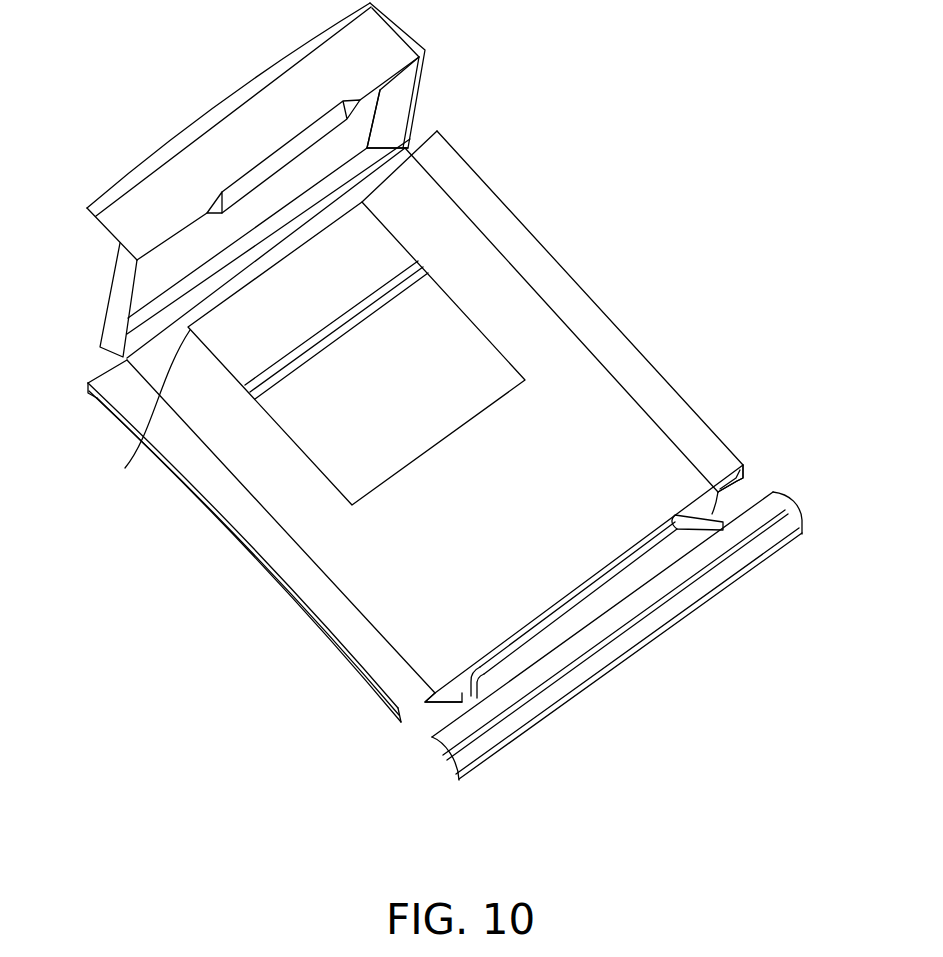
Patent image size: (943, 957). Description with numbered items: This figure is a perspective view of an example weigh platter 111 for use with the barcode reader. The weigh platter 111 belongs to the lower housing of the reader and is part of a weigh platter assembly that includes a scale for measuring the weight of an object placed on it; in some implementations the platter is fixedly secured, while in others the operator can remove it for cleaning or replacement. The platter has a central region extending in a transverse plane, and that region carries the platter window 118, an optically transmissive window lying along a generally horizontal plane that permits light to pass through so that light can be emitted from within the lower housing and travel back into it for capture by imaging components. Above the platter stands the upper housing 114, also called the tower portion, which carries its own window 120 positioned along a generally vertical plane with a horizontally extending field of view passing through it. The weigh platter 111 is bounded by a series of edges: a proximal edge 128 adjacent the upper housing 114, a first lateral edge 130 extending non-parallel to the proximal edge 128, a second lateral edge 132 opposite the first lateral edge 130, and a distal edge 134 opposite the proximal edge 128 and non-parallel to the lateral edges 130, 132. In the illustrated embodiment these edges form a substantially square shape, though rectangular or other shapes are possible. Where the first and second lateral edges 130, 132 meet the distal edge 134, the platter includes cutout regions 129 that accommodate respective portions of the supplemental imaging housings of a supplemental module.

The weigh platter 111 is at (415, 416).
The upper housing 114 is at (122, 223).
The platter window 118 is at (356, 353).
The window 120 is at (350, 137).
The proximal edge 128 is at (142, 417).
The cutout regions 129 is at (745, 488).
The first lateral edge 130 is at (266, 568).
The second lateral edge 132 is at (603, 307).
The distal edge 134 is at (626, 667).